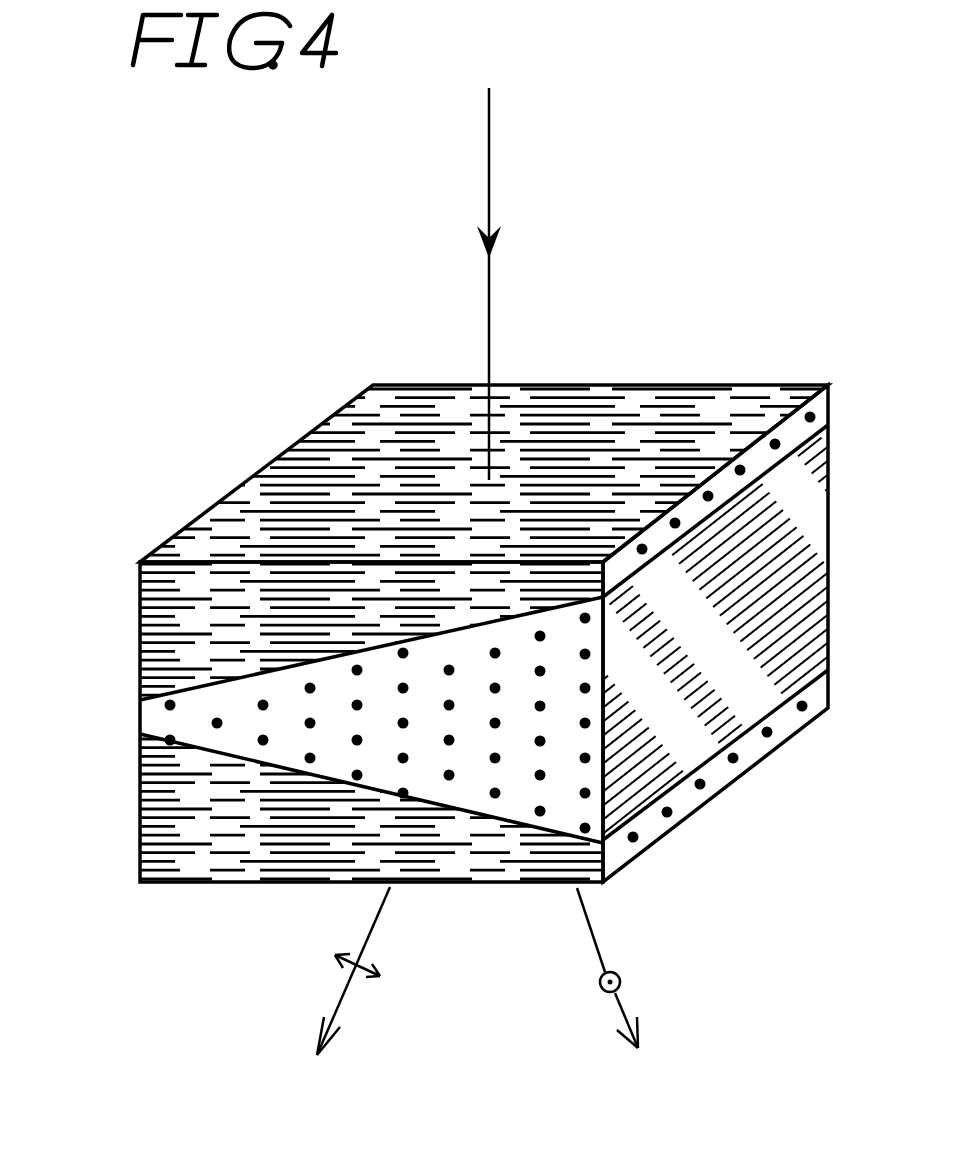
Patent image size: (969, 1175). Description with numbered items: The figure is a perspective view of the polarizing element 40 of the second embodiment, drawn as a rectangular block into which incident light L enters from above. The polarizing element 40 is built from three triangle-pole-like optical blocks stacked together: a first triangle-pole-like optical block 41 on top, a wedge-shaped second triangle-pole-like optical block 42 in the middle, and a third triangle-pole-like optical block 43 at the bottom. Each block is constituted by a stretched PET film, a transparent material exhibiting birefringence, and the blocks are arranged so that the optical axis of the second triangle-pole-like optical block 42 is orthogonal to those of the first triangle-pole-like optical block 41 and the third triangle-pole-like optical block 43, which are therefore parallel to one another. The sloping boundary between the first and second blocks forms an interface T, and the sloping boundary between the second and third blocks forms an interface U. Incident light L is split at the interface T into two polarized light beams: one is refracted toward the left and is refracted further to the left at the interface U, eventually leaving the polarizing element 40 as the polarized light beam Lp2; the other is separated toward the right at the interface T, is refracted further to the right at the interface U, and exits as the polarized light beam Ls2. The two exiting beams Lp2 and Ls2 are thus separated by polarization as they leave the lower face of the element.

The polarizing element 40 is at (675, 283).
The first triangle-pole-like optical block 41 is at (150, 622).
The second triangle-pole-like optical block 42 is at (148, 718).
The third triangle-pole-like optical block 43 is at (150, 804).
The incident light L is at (492, 177).
The interface T is at (143, 697).
The interface U is at (148, 740).
The polarized light beam Lp2 is at (343, 1002).
The polarized light beam Ls2 is at (620, 1003).